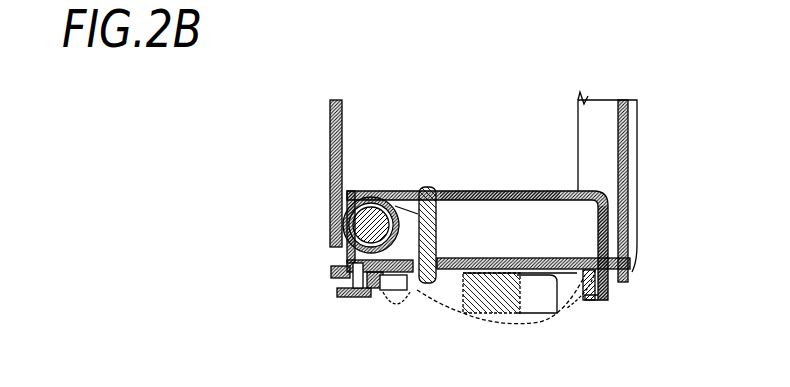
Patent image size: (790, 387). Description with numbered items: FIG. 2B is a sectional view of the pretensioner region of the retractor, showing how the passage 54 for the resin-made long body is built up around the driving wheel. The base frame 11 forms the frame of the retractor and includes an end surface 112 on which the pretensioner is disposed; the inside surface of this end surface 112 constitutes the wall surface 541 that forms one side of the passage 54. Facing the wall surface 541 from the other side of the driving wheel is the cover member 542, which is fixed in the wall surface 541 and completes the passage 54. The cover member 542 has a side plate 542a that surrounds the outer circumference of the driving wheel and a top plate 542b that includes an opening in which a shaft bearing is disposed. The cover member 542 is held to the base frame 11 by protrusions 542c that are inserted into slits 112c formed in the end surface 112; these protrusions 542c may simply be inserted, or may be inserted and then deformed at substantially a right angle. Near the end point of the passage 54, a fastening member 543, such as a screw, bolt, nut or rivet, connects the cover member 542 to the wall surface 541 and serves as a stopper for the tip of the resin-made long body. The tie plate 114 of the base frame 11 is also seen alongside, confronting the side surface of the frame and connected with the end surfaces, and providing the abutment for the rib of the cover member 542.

The base frame 11 is at (326, 129).
The passage 54 is at (595, 256).
The end surface 112 is at (569, 316).
The slits 112c is at (608, 236).
The tie plate 114 is at (628, 158).
The wall surface 541 is at (511, 258).
The cover member 542 is at (535, 185).
The side plate 542a is at (598, 219).
The top plate 542b is at (470, 190).
The protrusions 542c is at (608, 282).
The fastening member 543 is at (437, 226).